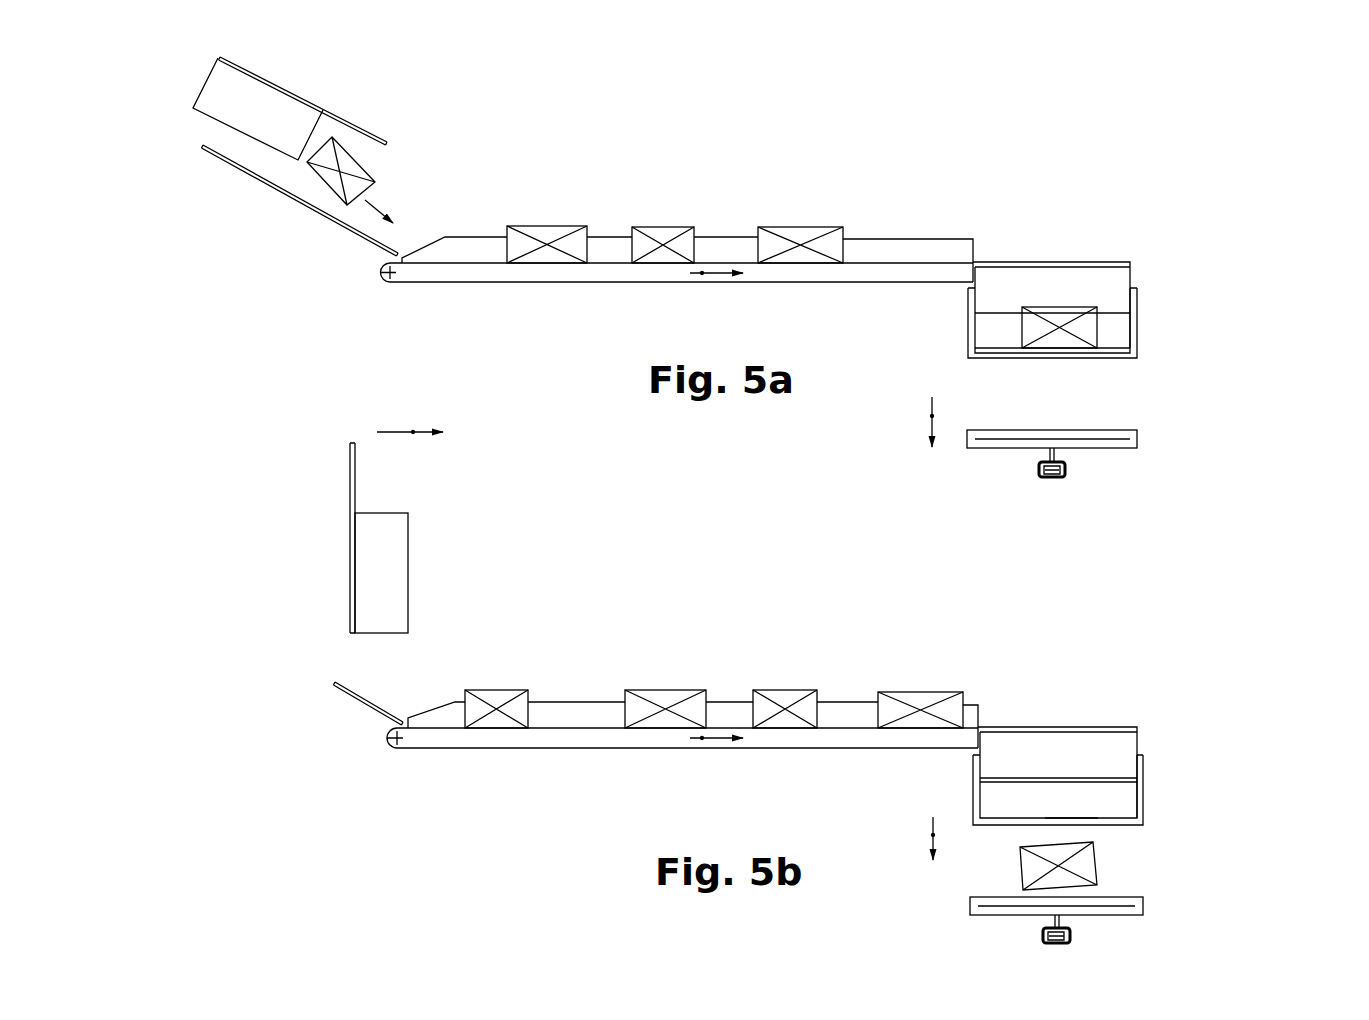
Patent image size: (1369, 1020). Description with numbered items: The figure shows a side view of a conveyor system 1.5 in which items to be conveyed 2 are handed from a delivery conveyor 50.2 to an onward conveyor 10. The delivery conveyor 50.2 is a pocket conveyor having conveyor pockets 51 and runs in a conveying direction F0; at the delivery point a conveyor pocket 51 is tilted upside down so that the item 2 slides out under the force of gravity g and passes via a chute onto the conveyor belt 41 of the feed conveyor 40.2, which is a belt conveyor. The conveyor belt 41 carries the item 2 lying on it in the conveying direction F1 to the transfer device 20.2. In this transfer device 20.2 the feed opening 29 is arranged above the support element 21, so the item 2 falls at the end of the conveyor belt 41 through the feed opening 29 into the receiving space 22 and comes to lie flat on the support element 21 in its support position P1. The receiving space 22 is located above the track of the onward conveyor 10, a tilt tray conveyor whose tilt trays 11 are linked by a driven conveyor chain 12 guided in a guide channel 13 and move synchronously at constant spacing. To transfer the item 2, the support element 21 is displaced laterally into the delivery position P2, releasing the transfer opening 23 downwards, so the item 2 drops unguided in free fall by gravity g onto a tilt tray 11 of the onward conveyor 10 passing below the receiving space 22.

In FIG. 5A, the conveyor system 1.5 is at (185, 112).
In FIG. 5B, the conveyor system 1.5 is at (265, 475).
In FIG. 5A, the item to be conveyed 2 is at (350, 173).
In FIG. 5B, the item to be conveyed 2 is at (495, 697).
In FIG. 5A, the onward conveyor 10 is at (1142, 442).
In FIG. 5B, the onward conveyor 10 is at (1150, 902).
In FIG. 5A, the tilt tray 11 is at (1062, 437).
In FIG. 5B, the tilt tray 11 is at (978, 903).
In FIG. 5A, the conveyor chain 12 is at (1066, 472).
In FIG. 5B, the conveyor chain 12 is at (1071, 937).
In FIG. 5A, the guide channel 13 is at (1037, 470).
In FIG. 5B, the guide channel 13 is at (1042, 935).
In FIG. 5A, the transfer device 20.2 is at (1142, 293).
In FIG. 5B, the transfer device 20.2 is at (1150, 768).
In FIG. 5A, the support element 21 is at (985, 357).
In FIG. 5A, the receiving space 22 is at (1007, 335).
In FIG. 5B, the receiving space 22 is at (1042, 775).
In FIG. 5B, the transfer opening 23 is at (1045, 827).
In FIG. 5A, the feed opening 29 is at (1045, 270).
In FIG. 5B, the feed opening 29 is at (1048, 742).
In FIG. 5A, the feed conveyor 40.2 is at (887, 262).
In FIG. 5B, the feed conveyor 40.2 is at (590, 665).
In FIG. 5A, the conveyor belt 41 is at (545, 283).
In FIG. 5B, the conveyor belt 41 is at (543, 743).
In FIG. 5A, the delivery conveyor 50.2 is at (272, 82).
In FIG. 5B, the delivery conveyor 50.2 is at (345, 485).
In FIG. 5A, the conveyor pocket 51 is at (303, 118).
In FIG. 5B, the conveyor pocket 51 is at (370, 572).
In FIG. 5B, the conveying direction of the delivery conveyor F0 is at (413, 430).
In FIG. 5A, the conveying direction of the feed conveyor F1 is at (702, 273).
In FIG. 5B, the conveying direction of the feed conveyor F1 is at (705, 738).
In FIG. 5A, the support position P1 is at (1084, 364).
In FIG. 5B, the delivery position P2 is at (1098, 828).
In FIG. 5A, the gravity g is at (932, 416).
In FIG. 5B, the gravity g is at (933, 835).